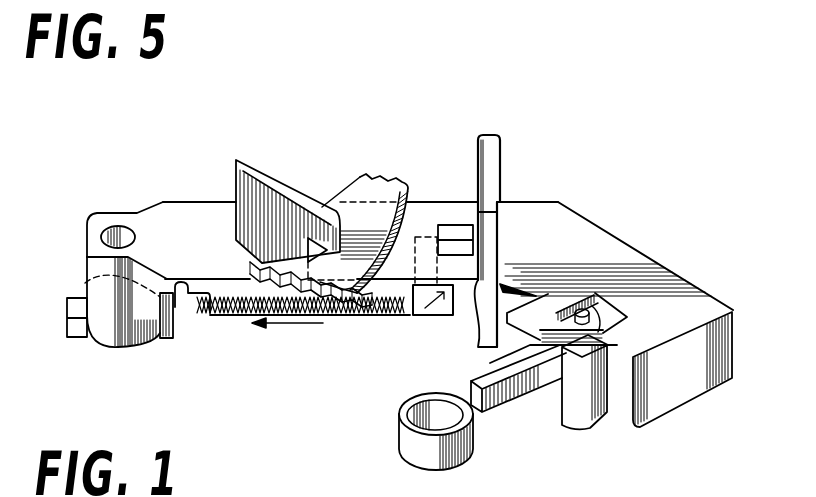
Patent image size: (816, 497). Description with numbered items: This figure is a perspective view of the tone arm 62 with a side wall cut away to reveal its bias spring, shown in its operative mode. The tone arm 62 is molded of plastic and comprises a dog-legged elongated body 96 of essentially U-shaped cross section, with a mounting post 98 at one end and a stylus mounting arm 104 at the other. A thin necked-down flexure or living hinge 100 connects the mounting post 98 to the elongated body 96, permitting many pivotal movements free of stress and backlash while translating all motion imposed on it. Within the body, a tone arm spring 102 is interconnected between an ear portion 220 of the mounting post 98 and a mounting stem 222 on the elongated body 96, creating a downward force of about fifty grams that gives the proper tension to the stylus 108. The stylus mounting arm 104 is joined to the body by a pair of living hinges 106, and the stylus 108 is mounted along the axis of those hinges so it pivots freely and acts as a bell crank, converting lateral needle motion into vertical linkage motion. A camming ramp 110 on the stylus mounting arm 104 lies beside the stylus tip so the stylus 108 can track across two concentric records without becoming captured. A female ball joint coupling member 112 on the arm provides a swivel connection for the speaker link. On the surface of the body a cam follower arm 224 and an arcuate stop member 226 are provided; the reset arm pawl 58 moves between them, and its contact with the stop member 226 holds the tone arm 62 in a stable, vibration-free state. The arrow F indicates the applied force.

The reset arm pawl 58 is at (378, 177).
The tone arm 62 is at (434, 133).
The elongated body 96 is at (612, 233).
The mounting post 98 is at (100, 212).
The living hinge 100 is at (185, 202).
The tone arm spring 102 is at (367, 314).
The stylus mounting arm 104 is at (513, 408).
The living hinges 106 is at (634, 347).
The stylus 108 is at (590, 310).
The camming ramp 110 is at (590, 427).
The female ball joint coupling member 112 is at (427, 460).
The ear portion 220 is at (75, 336).
The mounting stem 222 is at (437, 315).
The cam follower arm 224 is at (246, 160).
The arcuate stop member 226 is at (478, 155).
The applied force F is at (583, 203).